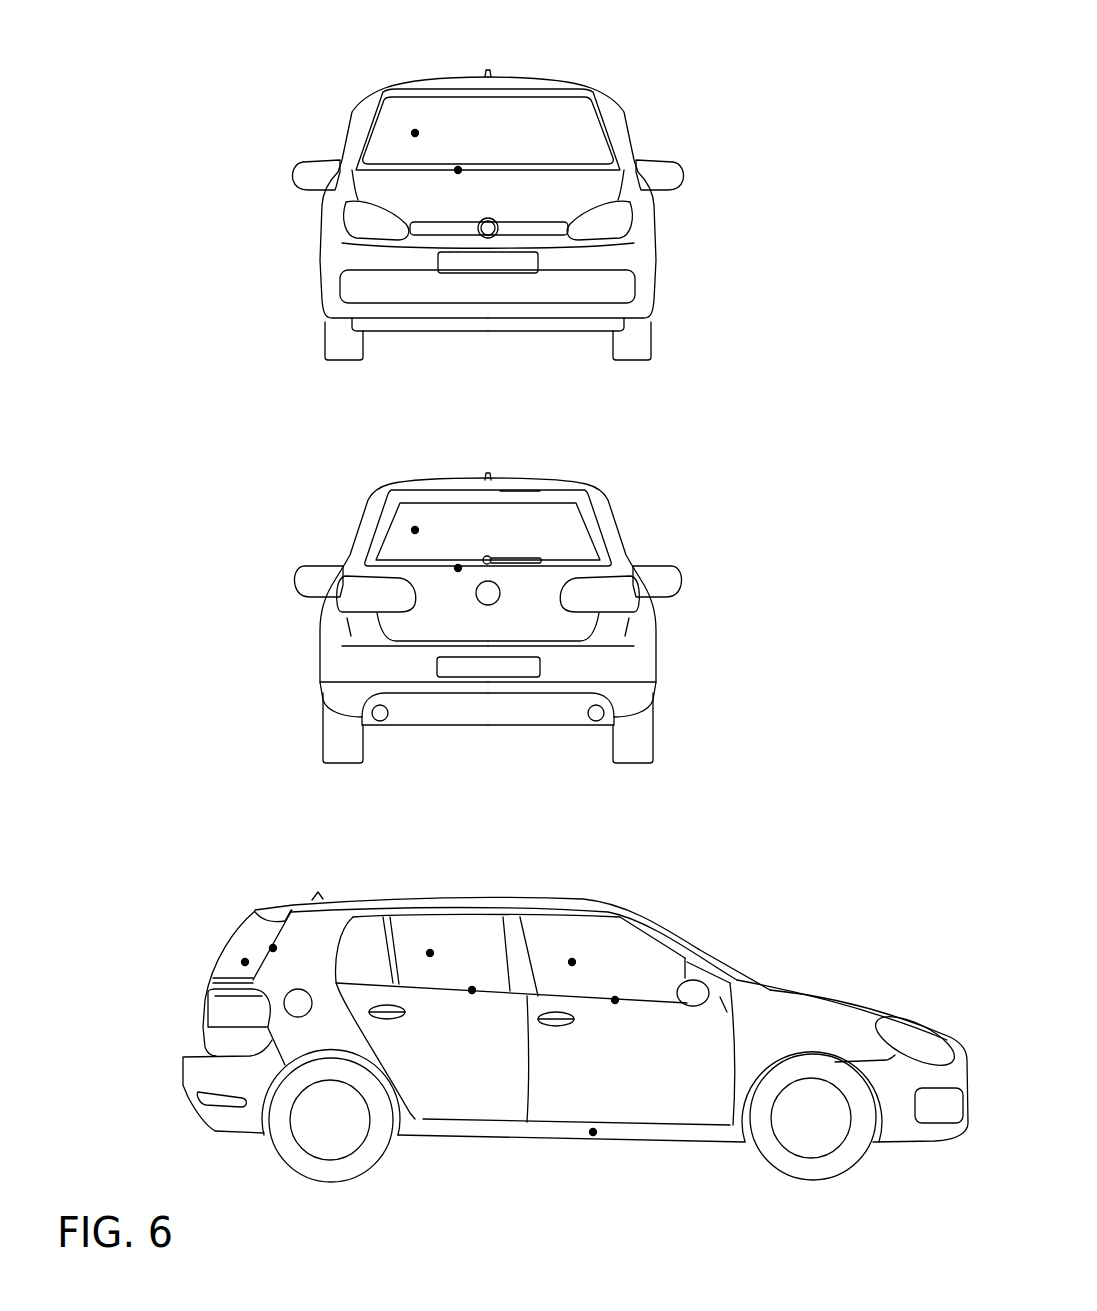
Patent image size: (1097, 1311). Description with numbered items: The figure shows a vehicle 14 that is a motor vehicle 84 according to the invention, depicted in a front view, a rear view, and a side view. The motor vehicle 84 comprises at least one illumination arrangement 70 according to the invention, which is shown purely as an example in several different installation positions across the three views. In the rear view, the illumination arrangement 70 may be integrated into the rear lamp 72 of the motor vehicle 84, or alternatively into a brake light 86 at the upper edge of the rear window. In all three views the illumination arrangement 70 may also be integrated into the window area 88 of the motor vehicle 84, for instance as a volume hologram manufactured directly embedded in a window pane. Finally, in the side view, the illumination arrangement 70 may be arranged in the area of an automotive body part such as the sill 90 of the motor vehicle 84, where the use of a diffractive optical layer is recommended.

The vehicle 14 is at (532, 608).
The motor vehicle 84 is at (665, 79).
The illumination arrangement 70 is at (421, 608).
The window area 88 is at (458, 167).
The brake light 86 is at (524, 485).
The rear lamp 72 is at (220, 1014).
The sill 90 is at (594, 1136).